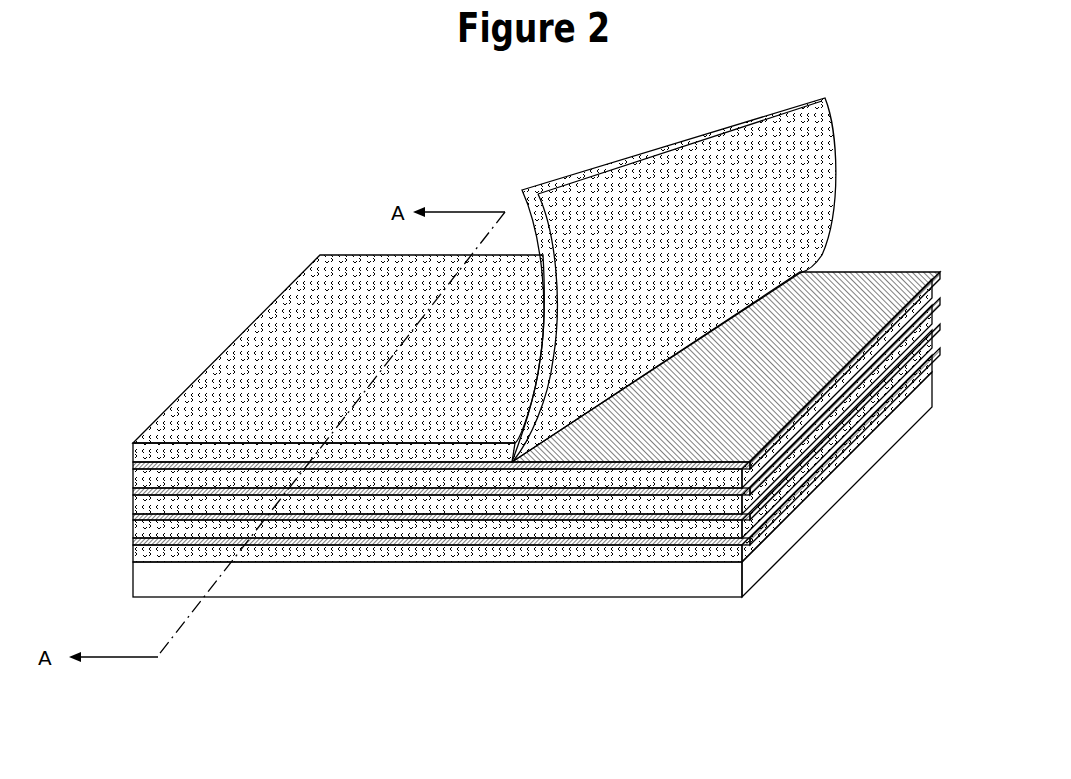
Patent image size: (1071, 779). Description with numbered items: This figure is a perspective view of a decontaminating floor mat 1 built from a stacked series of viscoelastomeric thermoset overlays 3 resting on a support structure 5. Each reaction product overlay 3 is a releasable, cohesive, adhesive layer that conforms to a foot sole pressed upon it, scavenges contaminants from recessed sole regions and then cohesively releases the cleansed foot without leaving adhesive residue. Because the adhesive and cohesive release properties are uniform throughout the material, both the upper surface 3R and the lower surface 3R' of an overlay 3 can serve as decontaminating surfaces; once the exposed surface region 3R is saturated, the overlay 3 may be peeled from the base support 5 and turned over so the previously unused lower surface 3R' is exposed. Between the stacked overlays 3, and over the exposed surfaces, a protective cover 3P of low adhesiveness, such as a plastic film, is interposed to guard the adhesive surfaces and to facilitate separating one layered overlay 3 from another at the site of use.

The floor mat 1 is at (456, 158).
The viscoelastomeric thermoset overlay 3 is at (140, 479).
The upper surface 3R is at (338, 316).
The lower surface 3R' is at (712, 246).
The protective cover 3P is at (865, 288).
The support structure 5 is at (600, 578).